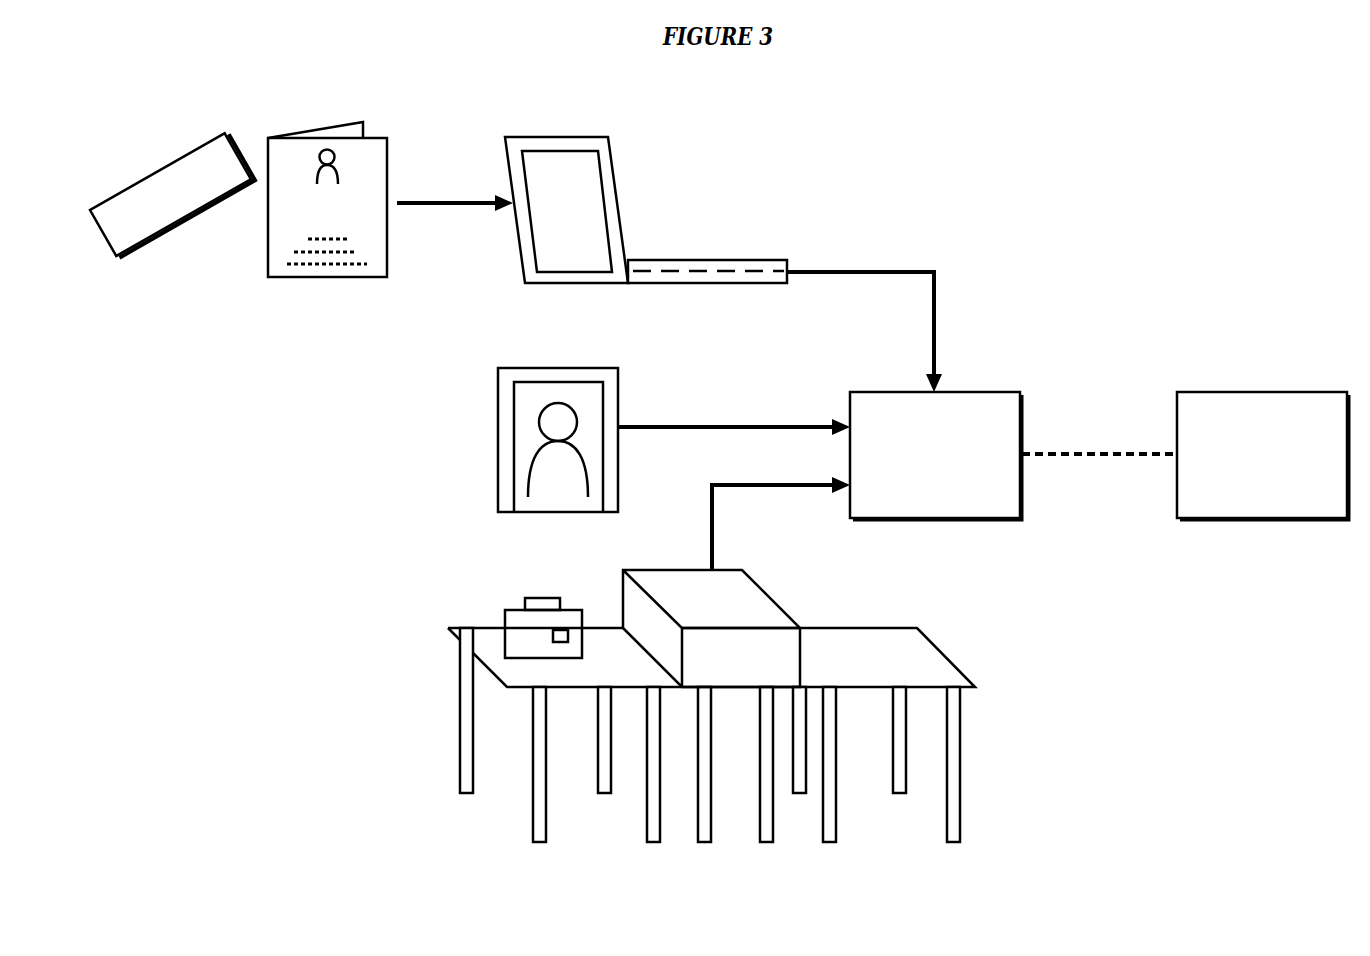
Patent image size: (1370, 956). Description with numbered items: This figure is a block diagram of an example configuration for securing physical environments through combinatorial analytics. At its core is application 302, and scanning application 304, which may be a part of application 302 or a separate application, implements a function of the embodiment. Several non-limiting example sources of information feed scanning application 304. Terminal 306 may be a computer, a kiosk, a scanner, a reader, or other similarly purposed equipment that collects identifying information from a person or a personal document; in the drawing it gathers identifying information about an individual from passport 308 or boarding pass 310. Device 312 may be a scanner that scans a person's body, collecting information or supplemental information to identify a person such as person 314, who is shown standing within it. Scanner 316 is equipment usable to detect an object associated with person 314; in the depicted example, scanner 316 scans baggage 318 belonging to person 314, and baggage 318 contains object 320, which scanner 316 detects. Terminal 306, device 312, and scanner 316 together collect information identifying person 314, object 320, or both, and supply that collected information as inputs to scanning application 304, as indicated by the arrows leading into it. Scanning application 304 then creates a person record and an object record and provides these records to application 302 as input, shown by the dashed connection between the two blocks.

The application 302 is at (1246, 473).
The scanning application 304 is at (921, 483).
The terminal 306 is at (553, 218).
The passport 308 is at (313, 225).
The boarding pass 310 is at (172, 195).
The device 312 is at (618, 368).
The person 314 is at (541, 483).
The scanner 316 is at (698, 606).
The baggage 318 is at (513, 643).
The object 320 is at (561, 630).